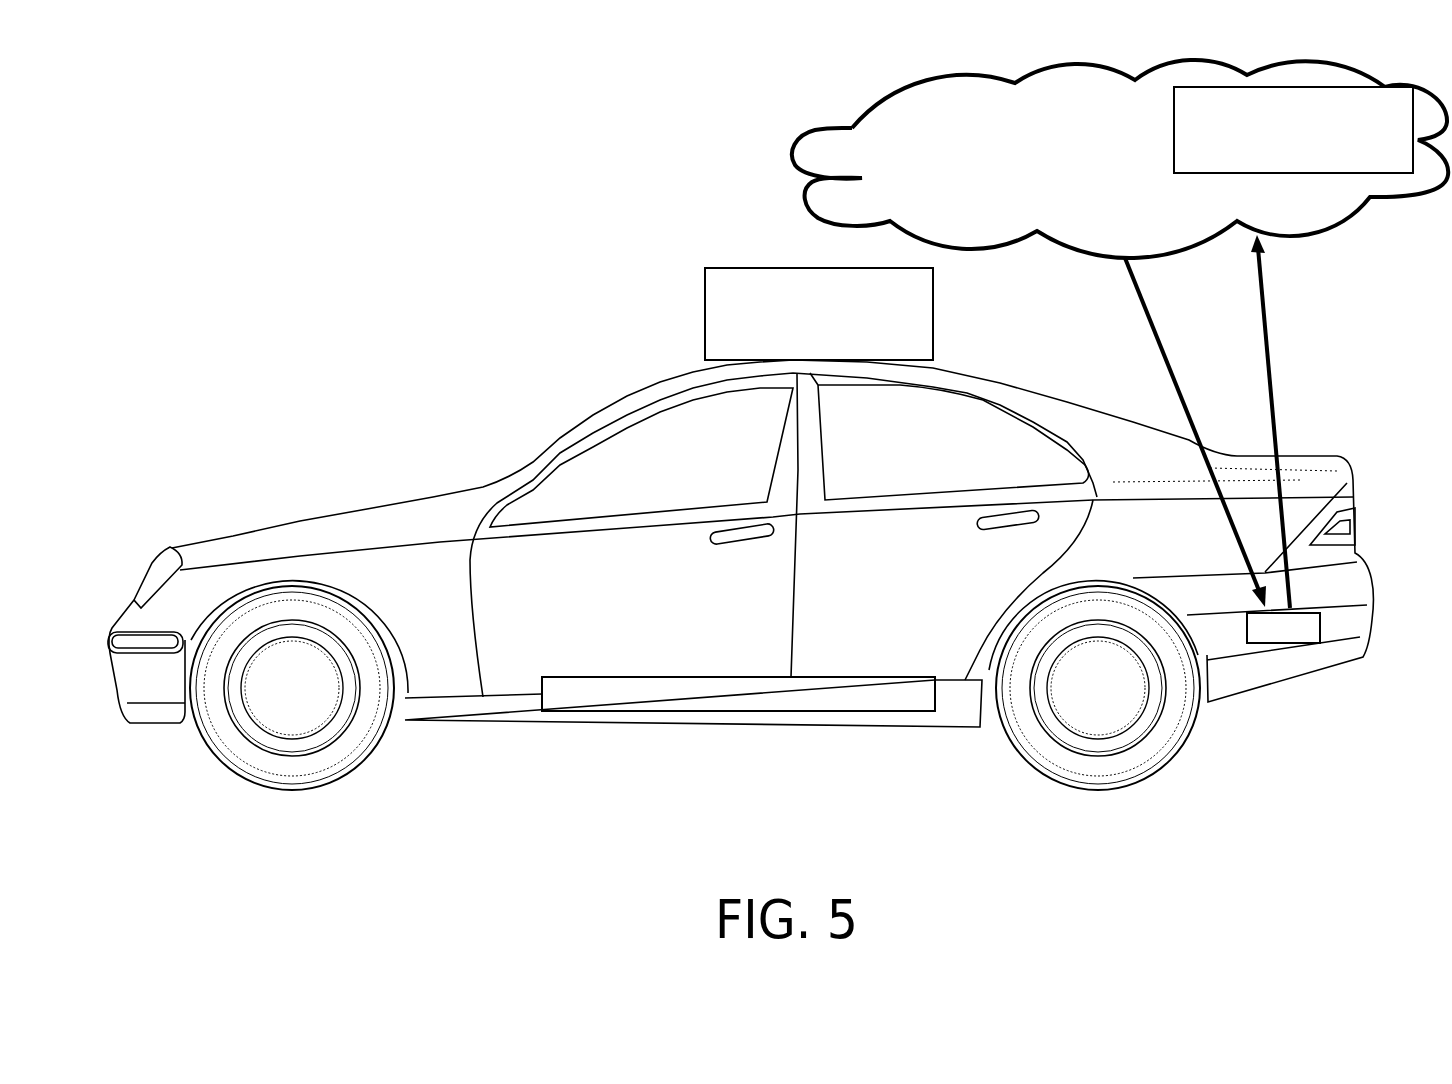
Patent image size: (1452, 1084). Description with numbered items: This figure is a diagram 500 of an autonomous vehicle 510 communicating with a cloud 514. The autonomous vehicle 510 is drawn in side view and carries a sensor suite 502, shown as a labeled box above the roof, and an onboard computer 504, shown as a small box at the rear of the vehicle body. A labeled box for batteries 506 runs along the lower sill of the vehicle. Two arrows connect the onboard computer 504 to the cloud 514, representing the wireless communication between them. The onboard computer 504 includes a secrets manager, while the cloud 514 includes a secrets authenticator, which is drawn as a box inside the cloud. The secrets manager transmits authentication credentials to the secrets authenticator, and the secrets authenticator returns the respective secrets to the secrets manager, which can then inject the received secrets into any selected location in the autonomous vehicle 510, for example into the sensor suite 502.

The vehicle system 500 is at (208, 241).
The sensor suite 502 is at (838, 347).
The onboard computer 504 is at (1281, 648).
The batteries 506 is at (820, 709).
The autonomous vehicle 510 is at (443, 601).
The cloud 514 is at (1120, 334).